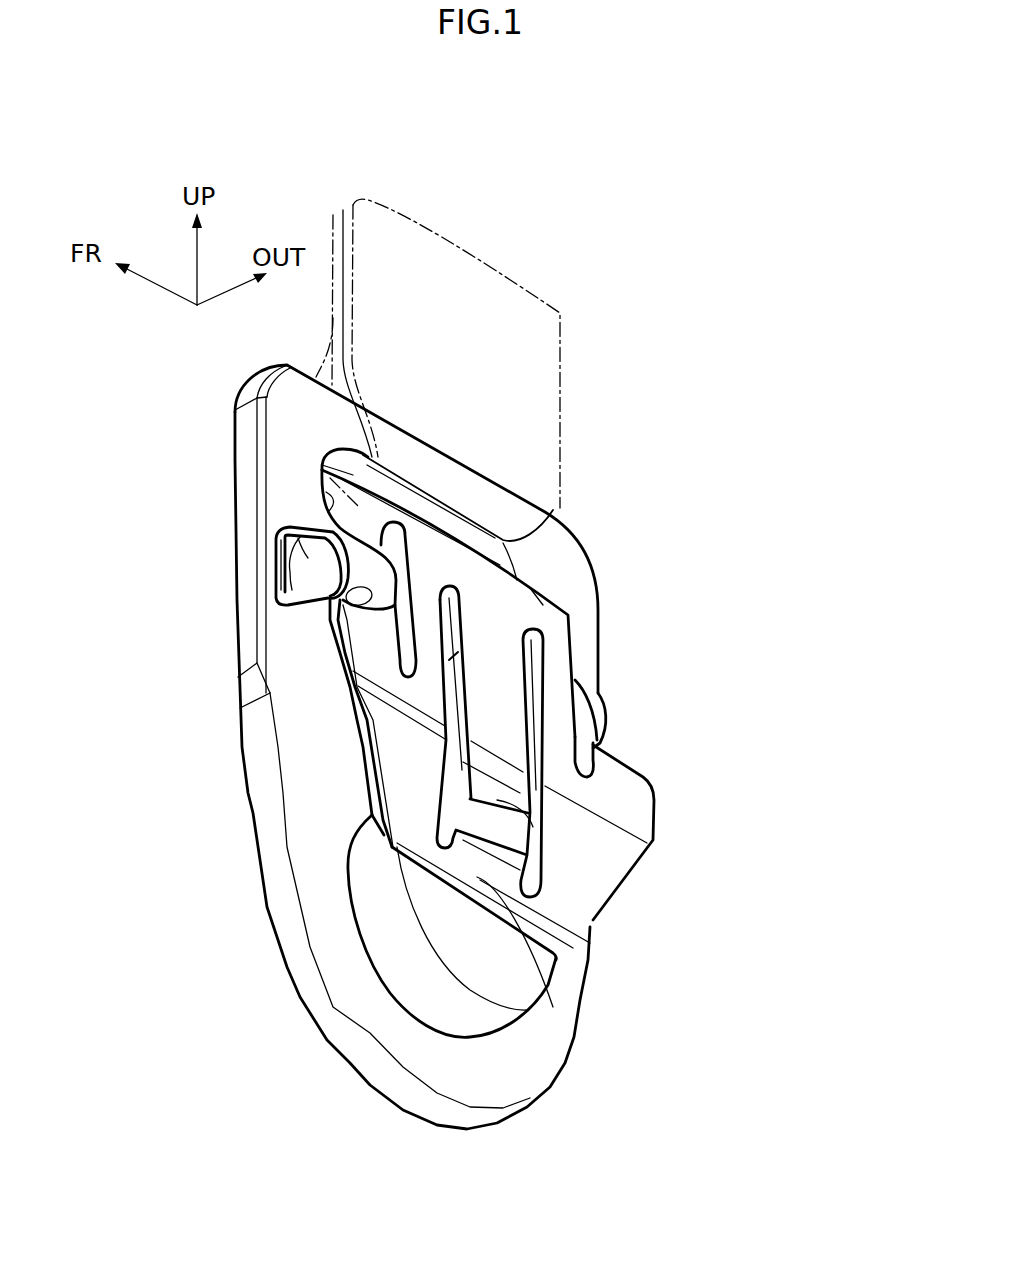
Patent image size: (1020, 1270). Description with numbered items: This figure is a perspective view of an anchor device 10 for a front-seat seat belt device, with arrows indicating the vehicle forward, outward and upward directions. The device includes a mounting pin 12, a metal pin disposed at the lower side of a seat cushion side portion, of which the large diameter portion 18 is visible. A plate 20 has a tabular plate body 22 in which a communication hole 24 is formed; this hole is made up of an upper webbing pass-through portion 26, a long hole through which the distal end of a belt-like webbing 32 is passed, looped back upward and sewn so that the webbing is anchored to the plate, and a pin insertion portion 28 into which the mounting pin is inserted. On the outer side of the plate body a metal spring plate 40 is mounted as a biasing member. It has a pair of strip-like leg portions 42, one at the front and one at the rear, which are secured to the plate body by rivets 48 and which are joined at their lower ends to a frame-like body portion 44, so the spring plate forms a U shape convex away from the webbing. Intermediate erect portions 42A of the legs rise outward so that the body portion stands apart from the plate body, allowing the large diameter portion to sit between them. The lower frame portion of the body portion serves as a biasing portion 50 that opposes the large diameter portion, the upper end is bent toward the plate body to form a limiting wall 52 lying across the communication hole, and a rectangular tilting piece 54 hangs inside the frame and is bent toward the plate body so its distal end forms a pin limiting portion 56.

The anchor device 10 is at (627, 432).
The mounting pin 12 is at (368, 996).
The large diameter portion 18 is at (453, 1020).
The plate 20 is at (214, 646).
The plate body 22 is at (293, 727).
The communication hole 24 is at (530, 576).
The webbing pass-through portion 26 is at (320, 495).
The pin insertion portion 28 is at (355, 667).
The webbing 32 is at (562, 360).
The spring plate 40 is at (627, 746).
The leg portions 42 is at (276, 577).
The erect portions 42A is at (276, 594).
The body portion 44 is at (427, 695).
The rivets 48 is at (272, 537).
The biasing portion 50 is at (547, 1000).
The limiting wall 52 is at (395, 502).
The tilting piece 54 is at (500, 677).
The pin limiting portion 56 is at (547, 841).